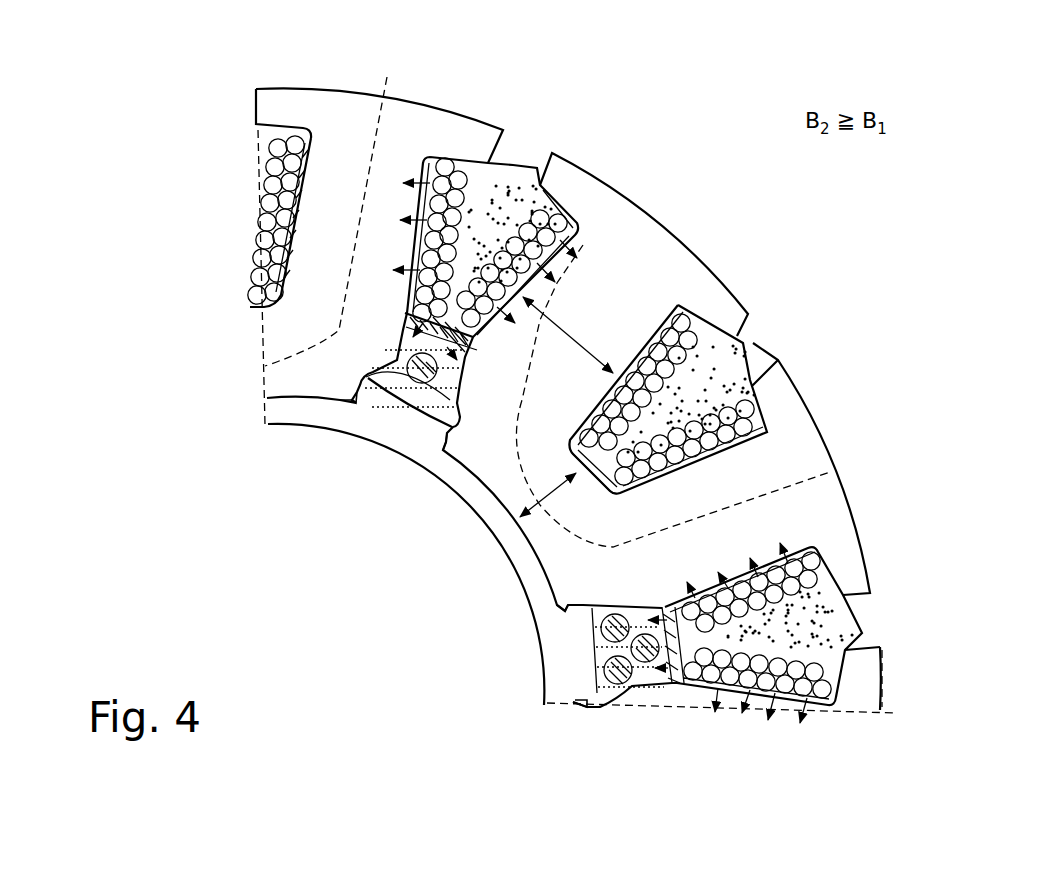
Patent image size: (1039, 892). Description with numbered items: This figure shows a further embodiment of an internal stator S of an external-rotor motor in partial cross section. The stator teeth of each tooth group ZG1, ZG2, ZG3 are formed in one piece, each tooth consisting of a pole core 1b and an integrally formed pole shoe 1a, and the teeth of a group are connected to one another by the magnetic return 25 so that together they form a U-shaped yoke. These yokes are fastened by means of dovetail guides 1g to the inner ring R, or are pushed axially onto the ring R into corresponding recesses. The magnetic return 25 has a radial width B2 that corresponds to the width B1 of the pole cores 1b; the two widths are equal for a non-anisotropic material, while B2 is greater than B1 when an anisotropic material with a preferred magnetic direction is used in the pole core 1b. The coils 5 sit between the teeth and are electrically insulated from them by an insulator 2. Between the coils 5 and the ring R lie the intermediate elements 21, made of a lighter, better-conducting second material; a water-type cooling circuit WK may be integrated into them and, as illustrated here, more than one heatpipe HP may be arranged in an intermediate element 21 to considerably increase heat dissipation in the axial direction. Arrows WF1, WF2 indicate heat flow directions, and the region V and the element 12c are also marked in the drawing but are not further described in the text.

The pole shoe 1a is at (683, 256).
The pole core 1b is at (342, 239).
The dovetail guides 1g is at (345, 398).
The insulator 2 is at (583, 245).
The coils 5 is at (452, 200).
The slot insulation liner 12c is at (407, 337).
The intermediate elements 21 is at (447, 407).
The magnetic return 25 is at (560, 475).
The heatpipes HP is at (613, 632).
The inner ring R is at (492, 507).
The internal stator S is at (613, 112).
The potting compound V is at (503, 200).
The water-type cooling circuit WK is at (415, 370).
The heat flow direction 1 WF1 is at (405, 217).
The heat flow direction 2 WF2 is at (400, 318).
The tooth group ZG1 is at (287, 120).
The tooth group ZG2 is at (648, 224).
The tooth group ZG3 is at (880, 717).
The width of the pole cores B1 is at (568, 334).
The radial width of the magnetic return B2 is at (554, 499).